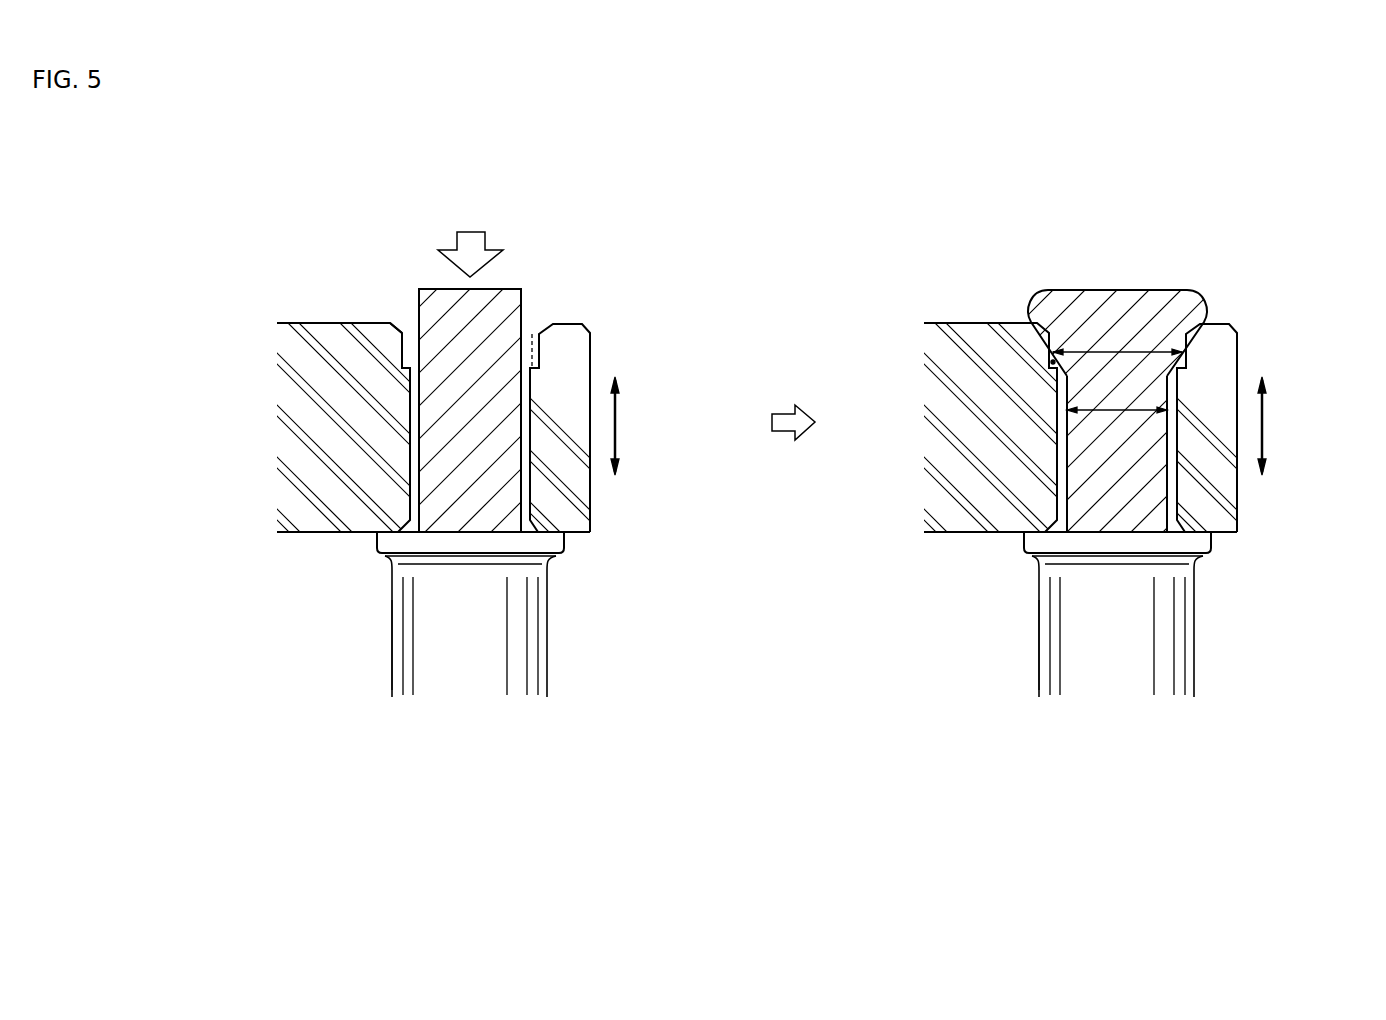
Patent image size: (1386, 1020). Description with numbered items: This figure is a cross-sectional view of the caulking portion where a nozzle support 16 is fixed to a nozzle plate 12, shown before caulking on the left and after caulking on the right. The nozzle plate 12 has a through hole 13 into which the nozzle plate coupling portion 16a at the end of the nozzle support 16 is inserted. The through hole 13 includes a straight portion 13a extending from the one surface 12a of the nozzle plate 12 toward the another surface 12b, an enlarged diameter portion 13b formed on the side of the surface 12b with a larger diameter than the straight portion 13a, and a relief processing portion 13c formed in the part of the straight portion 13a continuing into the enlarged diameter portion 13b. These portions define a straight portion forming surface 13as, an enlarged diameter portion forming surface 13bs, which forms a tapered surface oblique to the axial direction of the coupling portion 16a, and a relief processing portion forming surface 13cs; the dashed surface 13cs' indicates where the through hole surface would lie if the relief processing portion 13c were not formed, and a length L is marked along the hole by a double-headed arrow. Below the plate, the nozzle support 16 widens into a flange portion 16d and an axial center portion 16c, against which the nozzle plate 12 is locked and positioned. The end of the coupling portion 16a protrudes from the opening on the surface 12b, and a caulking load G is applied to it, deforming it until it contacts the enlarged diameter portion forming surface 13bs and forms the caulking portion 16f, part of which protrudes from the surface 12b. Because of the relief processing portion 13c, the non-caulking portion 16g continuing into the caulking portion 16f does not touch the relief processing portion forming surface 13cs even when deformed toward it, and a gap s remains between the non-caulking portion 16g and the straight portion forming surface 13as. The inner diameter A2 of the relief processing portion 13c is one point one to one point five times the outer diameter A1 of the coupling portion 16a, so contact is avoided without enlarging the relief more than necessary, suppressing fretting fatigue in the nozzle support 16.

The nozzle plate 12 is at (298, 317).
The one surface 12a is at (303, 534).
The another surface 12b is at (345, 323).
The through hole 13 is at (172, 343).
The straight portion 13a is at (415, 405).
The enlarged diameter portion 13b is at (407, 327).
The relief processing portion 13c is at (415, 355).
The straight portion forming surface 13as is at (530, 390).
The enlarged diameter portion forming surface 13bs is at (553, 326).
The relief processing portion forming surface 13cs is at (608, 329).
The through hole forming surface 13cs' is at (393, 298).
The nozzle support 16 is at (566, 607).
The nozzle plate coupling portion 16a is at (523, 315).
The axial center portion 16c is at (548, 647).
The flange portion 16d is at (565, 543).
The caulking portion 16f is at (1127, 303).
The non-caulking portion 16g is at (1047, 364).
The gap s is at (1052, 362).
The caulking load G is at (480, 231).
The length L is at (620, 418).
The outer diameter of nozzle plate coupling portion A1 is at (1117, 396).
The inner diameter of relief processing portion A2 is at (1117, 338).